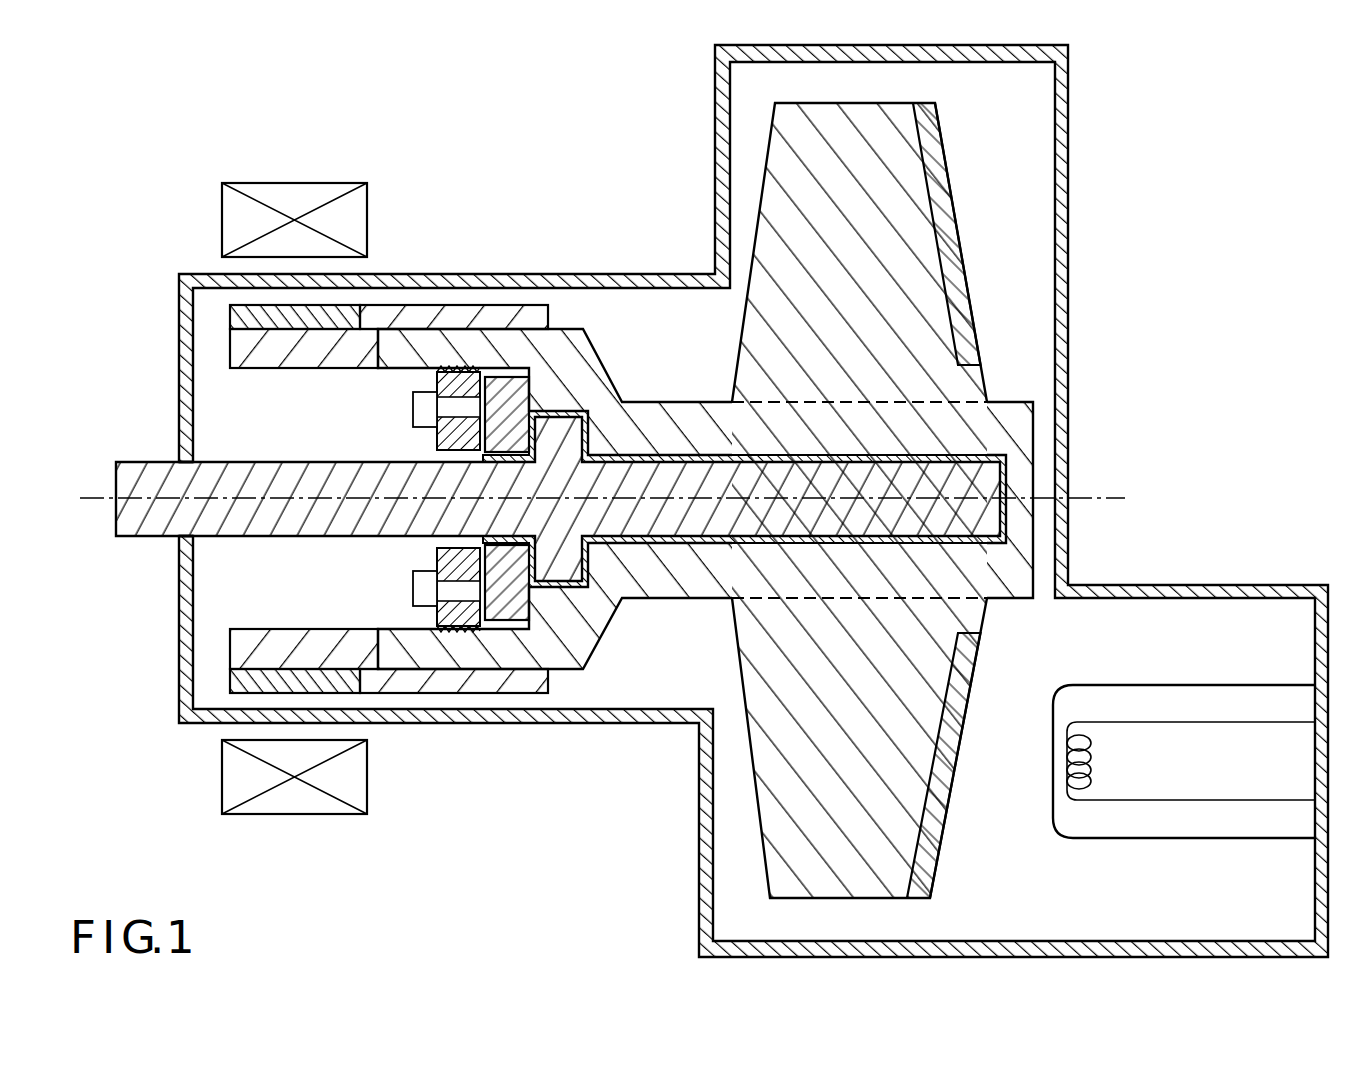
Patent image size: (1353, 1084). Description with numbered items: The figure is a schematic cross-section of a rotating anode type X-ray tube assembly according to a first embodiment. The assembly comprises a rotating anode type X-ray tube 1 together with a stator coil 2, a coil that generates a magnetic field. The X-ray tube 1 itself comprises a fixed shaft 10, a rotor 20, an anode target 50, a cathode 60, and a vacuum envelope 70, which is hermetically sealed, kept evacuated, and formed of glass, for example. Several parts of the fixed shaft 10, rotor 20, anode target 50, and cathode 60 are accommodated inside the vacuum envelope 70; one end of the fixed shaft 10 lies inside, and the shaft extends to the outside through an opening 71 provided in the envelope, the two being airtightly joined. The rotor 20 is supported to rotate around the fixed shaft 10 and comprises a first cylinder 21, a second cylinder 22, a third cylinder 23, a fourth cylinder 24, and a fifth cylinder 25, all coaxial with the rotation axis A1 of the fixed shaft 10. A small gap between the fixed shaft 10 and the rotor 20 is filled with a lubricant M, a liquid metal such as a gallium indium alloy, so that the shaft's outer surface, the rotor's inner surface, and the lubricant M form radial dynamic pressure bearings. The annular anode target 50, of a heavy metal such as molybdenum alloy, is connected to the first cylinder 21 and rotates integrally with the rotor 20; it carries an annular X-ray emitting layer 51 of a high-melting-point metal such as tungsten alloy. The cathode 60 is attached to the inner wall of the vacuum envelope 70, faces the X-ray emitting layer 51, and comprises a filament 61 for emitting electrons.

The rotating anode type X-ray tube 1 is at (753, 501).
The stator coil 2 is at (335, 183).
The fixed shaft 10 is at (155, 537).
The rotor 20 is at (713, 480).
The first cylinder 21 is at (677, 409).
The second cylinder 22 is at (505, 400).
The third cylinder 23 is at (463, 390).
The fourth cylinder 24 is at (403, 318).
The fifth cylinder 25 is at (248, 313).
The anode target 50 is at (864, 480).
The X-ray emitting layer 51 is at (940, 160).
The cathode 60 is at (1160, 807).
The filament 61 is at (1066, 758).
The vacuum envelope 70 is at (1236, 585).
The opening 71 is at (182, 466).
The axis A1 is at (1100, 496).
The lubricant M is at (676, 545).